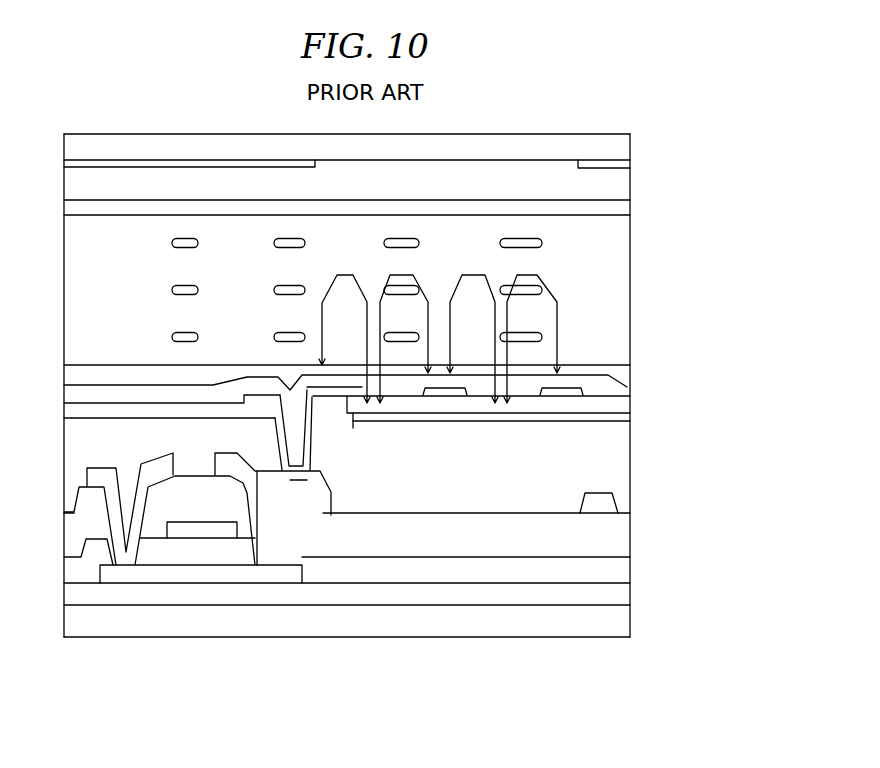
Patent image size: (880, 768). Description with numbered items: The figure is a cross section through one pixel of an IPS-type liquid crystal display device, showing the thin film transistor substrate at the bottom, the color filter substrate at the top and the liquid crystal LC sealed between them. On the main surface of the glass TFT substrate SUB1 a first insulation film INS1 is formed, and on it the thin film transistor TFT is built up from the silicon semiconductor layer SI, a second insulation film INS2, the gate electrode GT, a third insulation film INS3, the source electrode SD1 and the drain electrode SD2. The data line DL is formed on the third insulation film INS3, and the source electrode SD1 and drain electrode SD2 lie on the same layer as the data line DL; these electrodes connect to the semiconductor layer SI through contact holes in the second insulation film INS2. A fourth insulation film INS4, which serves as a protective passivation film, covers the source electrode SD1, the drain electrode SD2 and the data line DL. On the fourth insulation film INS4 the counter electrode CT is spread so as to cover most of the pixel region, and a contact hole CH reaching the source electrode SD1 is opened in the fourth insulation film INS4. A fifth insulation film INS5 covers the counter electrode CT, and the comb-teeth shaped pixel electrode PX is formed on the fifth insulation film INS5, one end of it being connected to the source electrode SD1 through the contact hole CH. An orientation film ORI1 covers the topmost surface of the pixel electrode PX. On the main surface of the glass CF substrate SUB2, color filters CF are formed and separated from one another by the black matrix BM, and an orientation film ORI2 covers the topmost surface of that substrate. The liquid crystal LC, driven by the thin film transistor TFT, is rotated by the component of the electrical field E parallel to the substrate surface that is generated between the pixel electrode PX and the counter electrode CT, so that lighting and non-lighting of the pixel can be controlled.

The black matrix BM is at (108, 158).
The CF substrate SUB2 is at (615, 152).
The color filter CF is at (615, 188).
The orientation film ORI2 is at (622, 208).
The liquid crystal LC is at (547, 245).
The electrical field E is at (558, 318).
The orientation film ORI1 is at (627, 387).
The fifth insulation film INS5 is at (630, 403).
The counter electrode CT is at (630, 421).
The fourth insulation film INS4 is at (622, 462).
The data line DL is at (612, 500).
The third insulation film INS3 is at (630, 535).
The second insulation film INS2 is at (630, 572).
The first insulation film INS1 is at (630, 592).
The TFT substrate SUB1 is at (587, 627).
The drain electrode SD2 is at (120, 555).
The semiconductor layer SI is at (158, 575).
The gate electrode GT is at (198, 530).
The thin film transistor TFT is at (197, 484).
The source electrode SD1 is at (306, 478).
The contact hole CH is at (315, 447).
The pixel electrode PX is at (347, 420).